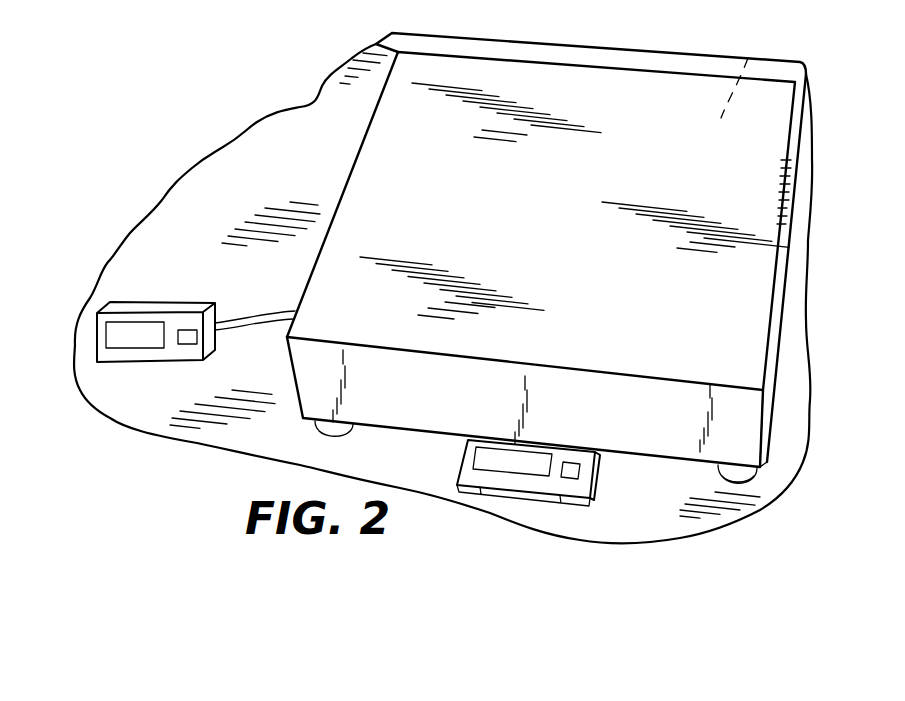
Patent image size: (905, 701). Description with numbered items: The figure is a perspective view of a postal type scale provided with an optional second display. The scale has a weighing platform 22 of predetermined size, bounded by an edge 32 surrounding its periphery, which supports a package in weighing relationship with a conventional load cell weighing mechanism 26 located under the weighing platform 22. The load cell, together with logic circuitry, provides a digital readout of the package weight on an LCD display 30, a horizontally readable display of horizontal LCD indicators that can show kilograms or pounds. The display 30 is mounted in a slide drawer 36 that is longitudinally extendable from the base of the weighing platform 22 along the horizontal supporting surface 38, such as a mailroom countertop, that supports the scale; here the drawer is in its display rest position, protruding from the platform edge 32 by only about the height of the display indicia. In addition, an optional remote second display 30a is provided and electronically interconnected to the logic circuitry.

The weighing platform 22 is at (623, 88).
The load cell weighing mechanism 26 is at (750, 52).
The LCD display 30 is at (535, 490).
The remote second display 30a is at (135, 364).
The edge 32 is at (700, 410).
The slide drawer 36 is at (592, 486).
The horizontal supporting surface 38 is at (698, 520).